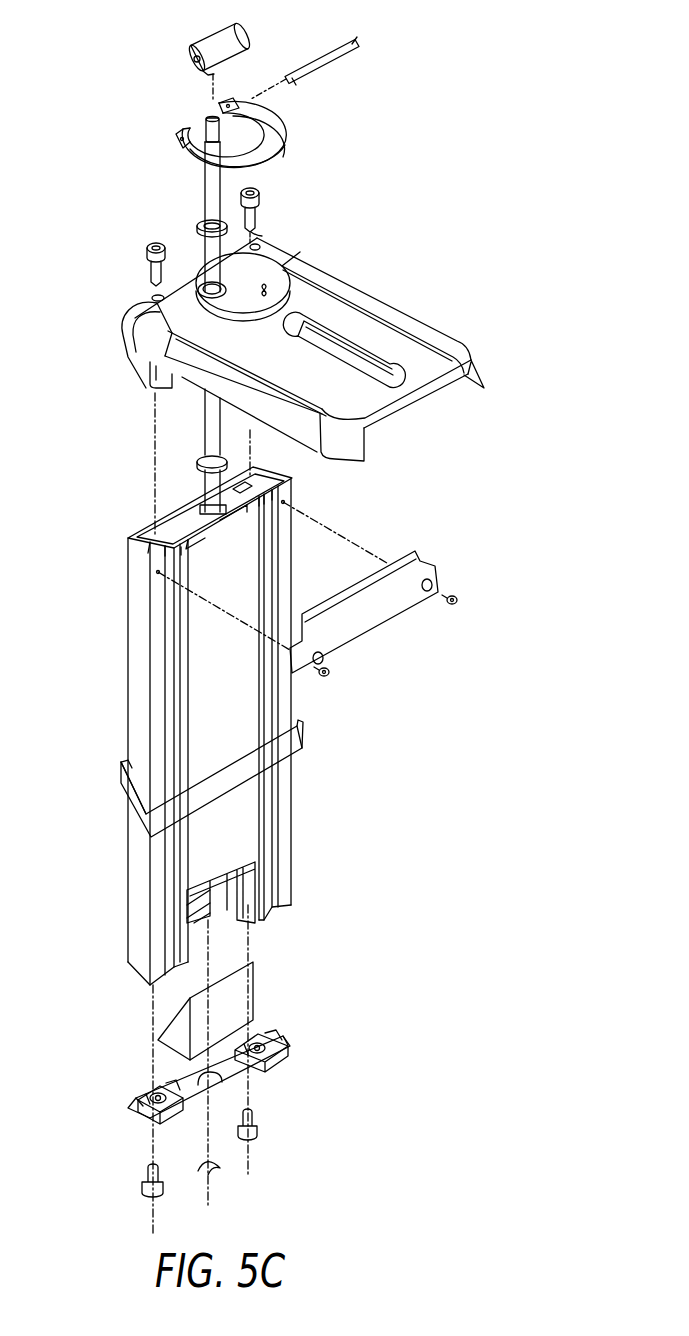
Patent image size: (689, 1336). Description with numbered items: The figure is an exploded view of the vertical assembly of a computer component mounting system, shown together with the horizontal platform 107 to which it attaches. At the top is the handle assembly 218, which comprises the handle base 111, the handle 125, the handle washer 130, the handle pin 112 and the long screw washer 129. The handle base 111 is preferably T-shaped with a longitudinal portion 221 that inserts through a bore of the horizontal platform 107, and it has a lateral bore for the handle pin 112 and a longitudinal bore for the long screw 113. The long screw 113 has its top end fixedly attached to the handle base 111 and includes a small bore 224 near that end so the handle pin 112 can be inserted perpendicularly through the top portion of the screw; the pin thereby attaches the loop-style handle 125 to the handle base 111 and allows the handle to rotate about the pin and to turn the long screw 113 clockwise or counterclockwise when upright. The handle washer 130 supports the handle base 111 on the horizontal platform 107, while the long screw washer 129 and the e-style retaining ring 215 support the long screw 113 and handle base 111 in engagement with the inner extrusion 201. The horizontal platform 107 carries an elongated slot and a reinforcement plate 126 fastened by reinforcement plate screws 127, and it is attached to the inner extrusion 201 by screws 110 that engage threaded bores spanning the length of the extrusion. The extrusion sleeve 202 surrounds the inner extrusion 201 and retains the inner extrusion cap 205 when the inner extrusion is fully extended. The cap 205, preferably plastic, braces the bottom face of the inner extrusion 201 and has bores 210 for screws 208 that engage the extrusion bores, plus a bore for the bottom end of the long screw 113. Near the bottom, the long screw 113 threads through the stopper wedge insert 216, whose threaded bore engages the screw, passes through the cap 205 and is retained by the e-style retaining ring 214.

The horizontal platform 107 is at (462, 390).
The screws 110 is at (147, 251).
The handle base 111 is at (215, 38).
The handle pin 112 is at (334, 62).
The long screw 113 is at (208, 115).
The handle 125 is at (180, 142).
The reinforcement plate 126 is at (379, 626).
The reinforcement plate screws 127 is at (458, 601).
The long screw washer 129 is at (196, 461).
The handle washer 130 is at (198, 224).
The inner extrusion 201 is at (127, 964).
The extrusion sleeve 202 is at (313, 749).
The inner extrusion cap 205 is at (121, 1118).
The screws 208 is at (144, 1175).
The bores 210 is at (150, 1095).
The e-style retaining ring 214 is at (220, 1173).
The e-style retaining ring 215 is at (206, 510).
The stopper wedge insert 216 is at (254, 992).
The handle assembly 218 is at (345, 168).
The longitudinal portion 221 is at (226, 73).
The small bore 224 is at (190, 59).